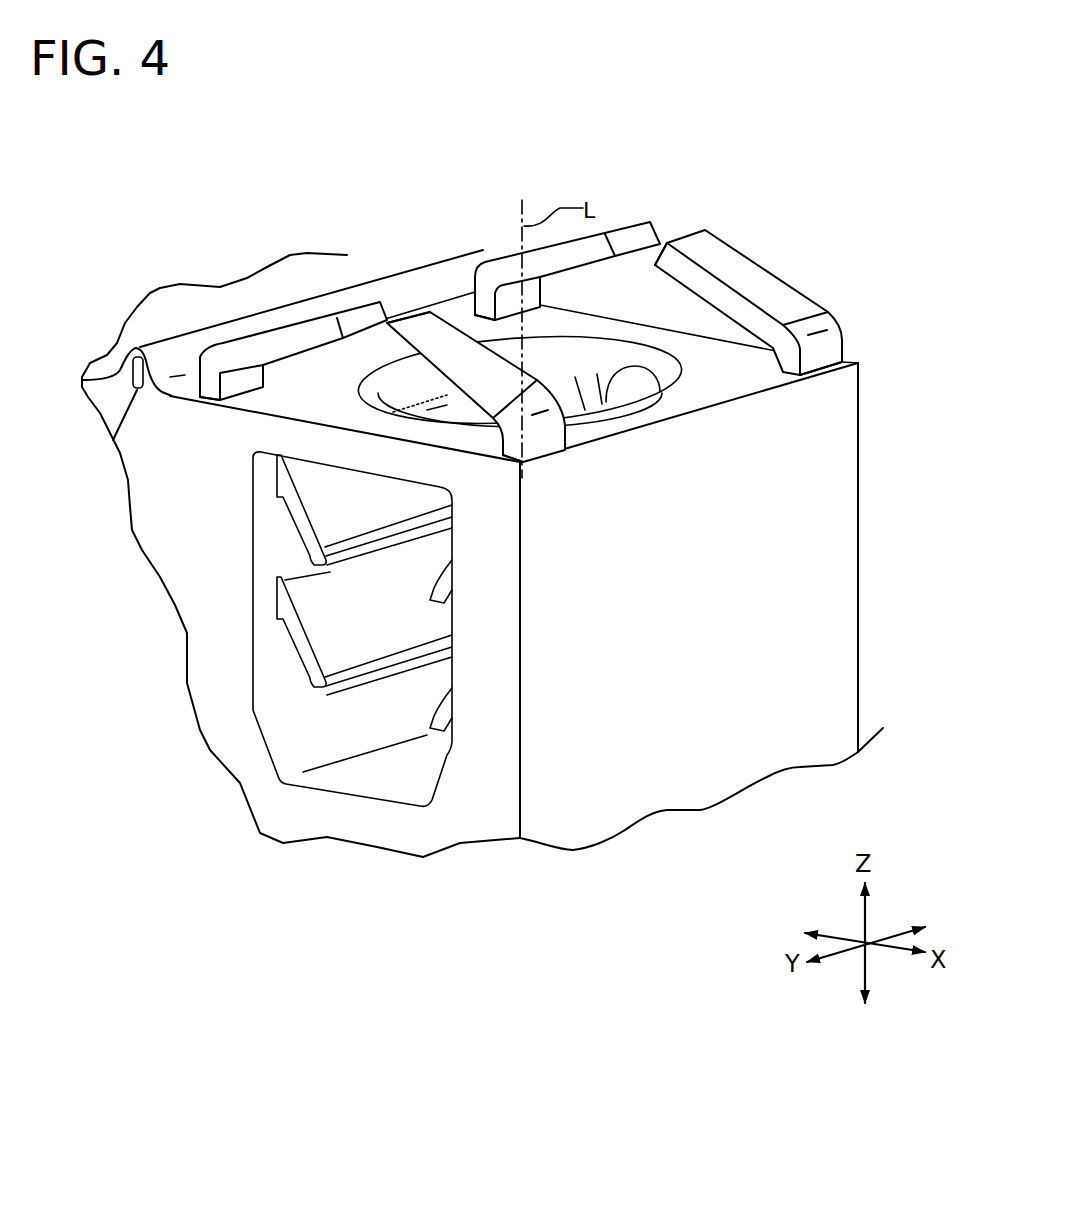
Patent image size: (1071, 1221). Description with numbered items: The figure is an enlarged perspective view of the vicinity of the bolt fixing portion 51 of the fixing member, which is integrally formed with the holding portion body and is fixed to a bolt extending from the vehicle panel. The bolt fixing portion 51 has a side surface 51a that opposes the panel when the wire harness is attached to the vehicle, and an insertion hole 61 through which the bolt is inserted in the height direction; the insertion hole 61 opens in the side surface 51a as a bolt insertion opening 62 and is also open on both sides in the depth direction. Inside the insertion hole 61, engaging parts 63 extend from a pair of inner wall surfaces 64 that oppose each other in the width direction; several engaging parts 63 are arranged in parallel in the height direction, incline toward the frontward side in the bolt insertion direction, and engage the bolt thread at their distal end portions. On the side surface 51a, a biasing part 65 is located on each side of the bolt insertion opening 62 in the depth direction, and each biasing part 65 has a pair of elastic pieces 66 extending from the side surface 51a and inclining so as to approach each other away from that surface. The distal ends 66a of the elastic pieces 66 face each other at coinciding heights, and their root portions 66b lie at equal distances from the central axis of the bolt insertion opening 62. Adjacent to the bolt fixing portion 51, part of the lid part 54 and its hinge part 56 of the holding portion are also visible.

The bolt fixing portion 51 is at (858, 520).
The side surface 51a is at (640, 290).
The lid part 54 is at (100, 400).
The hinge part 56 is at (127, 362).
The insertion hole 61 is at (380, 785).
The bolt insertion opening 62 is at (665, 392).
The engaging part 63 is at (290, 525).
The inner wall surfaces 64 is at (275, 565).
The biasing part 65 is at (551, 338).
The elastic pieces 66 is at (305, 320).
The distal ends 66a is at (645, 240).
The root portions 66b is at (205, 398).